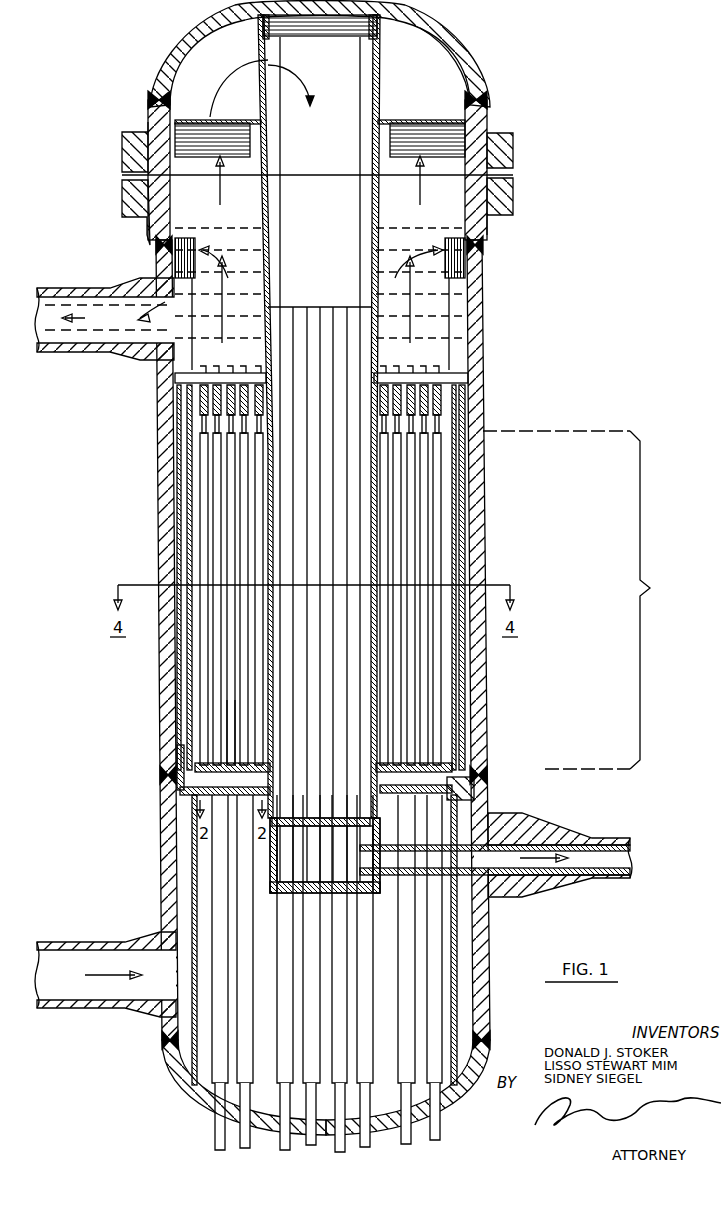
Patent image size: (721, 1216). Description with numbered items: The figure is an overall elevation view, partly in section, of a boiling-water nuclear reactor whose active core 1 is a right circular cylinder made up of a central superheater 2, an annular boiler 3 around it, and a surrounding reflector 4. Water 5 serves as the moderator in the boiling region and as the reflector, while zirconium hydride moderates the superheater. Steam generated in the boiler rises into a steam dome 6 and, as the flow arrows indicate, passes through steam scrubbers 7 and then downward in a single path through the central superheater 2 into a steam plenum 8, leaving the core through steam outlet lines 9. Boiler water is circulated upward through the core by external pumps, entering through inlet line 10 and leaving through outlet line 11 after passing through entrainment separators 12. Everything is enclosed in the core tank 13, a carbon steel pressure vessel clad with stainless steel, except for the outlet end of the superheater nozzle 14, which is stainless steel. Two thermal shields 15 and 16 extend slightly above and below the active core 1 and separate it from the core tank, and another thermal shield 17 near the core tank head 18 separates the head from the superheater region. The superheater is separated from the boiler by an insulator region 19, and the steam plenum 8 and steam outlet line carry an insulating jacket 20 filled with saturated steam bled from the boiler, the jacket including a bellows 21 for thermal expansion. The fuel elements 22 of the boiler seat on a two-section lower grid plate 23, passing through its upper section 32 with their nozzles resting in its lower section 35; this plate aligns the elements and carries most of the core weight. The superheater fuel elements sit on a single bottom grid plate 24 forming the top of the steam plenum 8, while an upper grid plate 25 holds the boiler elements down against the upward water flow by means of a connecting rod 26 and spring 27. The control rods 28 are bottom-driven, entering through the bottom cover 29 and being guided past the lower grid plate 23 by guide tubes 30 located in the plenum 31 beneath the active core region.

The active core 1 is at (580, 600).
The central superheater 2 is at (330, 464).
The annular boiler 3 is at (425, 570).
The reflector 4 is at (443, 530).
The water 5 is at (455, 253).
The steam dome 6 is at (195, 62).
The steam scrubbers 7 is at (172, 118).
The steam plenum 8 is at (310, 862).
The steam outlet lines 9 is at (590, 842).
The inlet line 10 is at (80, 942).
The outlet line 11 is at (62, 290).
The entrainment separators 12 is at (185, 262).
The core tank 13 is at (170, 548).
The superheater nozzle 14 is at (578, 882).
The thermal shield 15 is at (180, 632).
The thermal shield 16 is at (190, 664).
The thermal shield 17 is at (330, 22).
The core tank head 18 is at (450, 30).
The insulator region 19 is at (270, 722).
The insulating jacket 20 is at (372, 893).
The bellows 21 is at (508, 830).
The fuel elements 22 is at (205, 470).
The lower grid plate 23 is at (187, 768).
The bottom grid plate 24 is at (470, 790).
The upper grid plate 25 is at (190, 378).
The connecting rod 26 is at (195, 424).
The spring 27 is at (200, 400).
The control rods 28 is at (220, 1085).
The bottom cover 29 is at (455, 1092).
The guide tubes 30 is at (222, 1033).
The plenum 31 is at (391, 988).
The upper section 32 is at (177, 753).
The lower section 35 is at (185, 787).